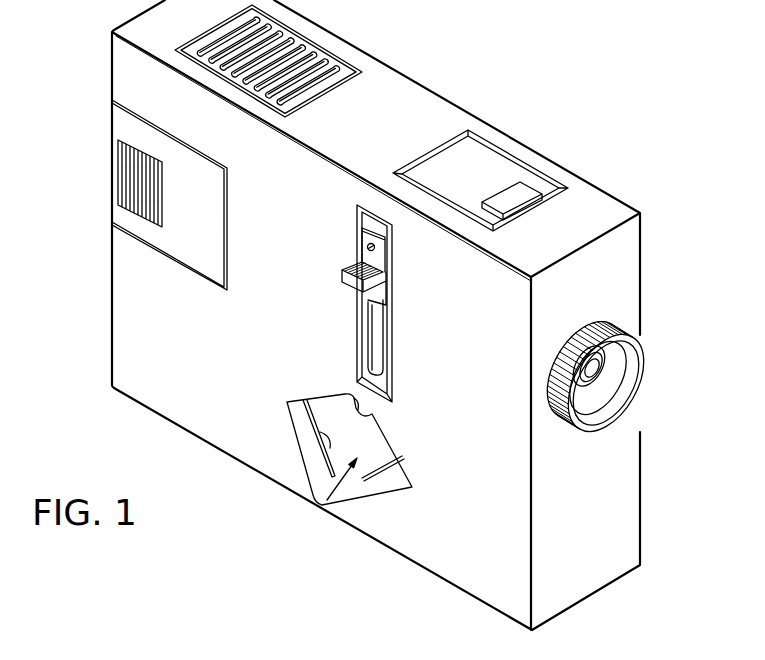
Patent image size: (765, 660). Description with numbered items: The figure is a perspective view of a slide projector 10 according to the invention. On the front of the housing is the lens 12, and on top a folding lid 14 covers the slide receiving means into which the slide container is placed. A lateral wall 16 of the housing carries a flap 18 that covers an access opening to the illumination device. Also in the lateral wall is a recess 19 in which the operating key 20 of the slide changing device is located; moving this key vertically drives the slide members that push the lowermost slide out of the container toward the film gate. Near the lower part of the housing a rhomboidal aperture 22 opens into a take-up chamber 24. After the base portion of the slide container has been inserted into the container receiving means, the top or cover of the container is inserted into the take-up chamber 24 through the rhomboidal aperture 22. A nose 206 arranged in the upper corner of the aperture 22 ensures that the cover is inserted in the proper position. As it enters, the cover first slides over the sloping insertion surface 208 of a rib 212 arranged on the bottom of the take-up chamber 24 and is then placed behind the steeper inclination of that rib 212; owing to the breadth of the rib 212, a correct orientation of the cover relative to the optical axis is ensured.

The projector 10 is at (426, 84).
The lens 12 is at (644, 376).
The folding lid 14 is at (498, 163).
The lateral wall 16 is at (124, 87).
The flap 18 is at (131, 131).
The recess 19 is at (377, 337).
The operating key 20 is at (372, 290).
The rhomboidal aperture 22 is at (403, 472).
The take-up chamber 24 is at (327, 500).
The nose 206 is at (372, 413).
The sloping insertion surface 208 is at (301, 421).
The rib 212 is at (329, 440).